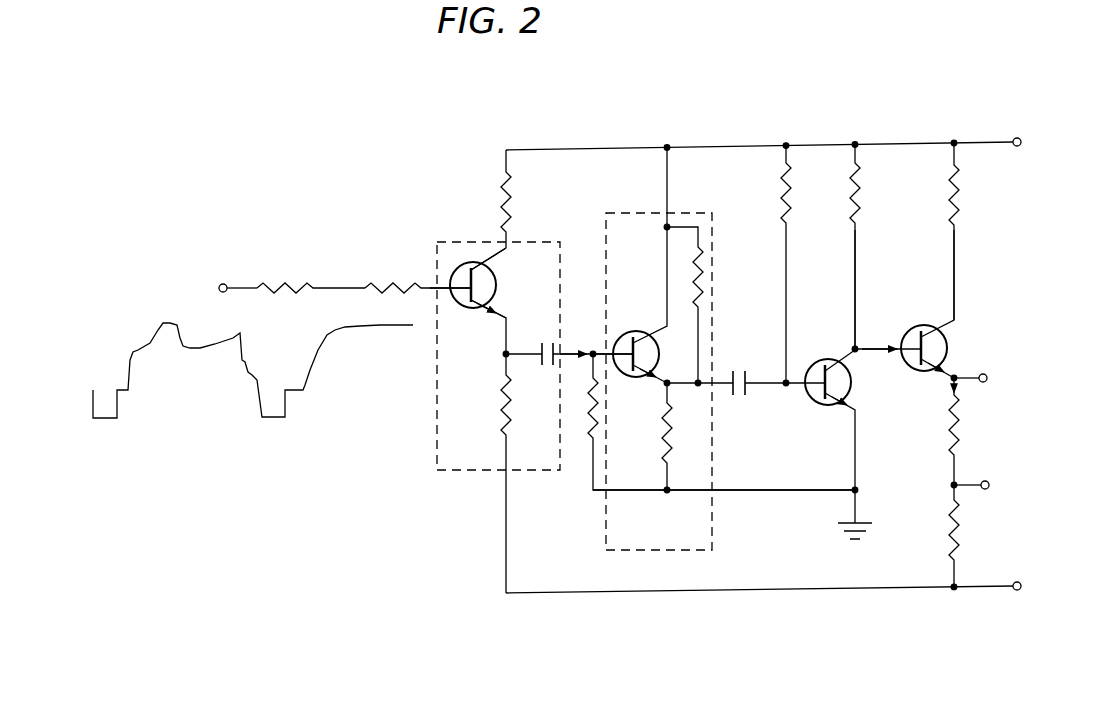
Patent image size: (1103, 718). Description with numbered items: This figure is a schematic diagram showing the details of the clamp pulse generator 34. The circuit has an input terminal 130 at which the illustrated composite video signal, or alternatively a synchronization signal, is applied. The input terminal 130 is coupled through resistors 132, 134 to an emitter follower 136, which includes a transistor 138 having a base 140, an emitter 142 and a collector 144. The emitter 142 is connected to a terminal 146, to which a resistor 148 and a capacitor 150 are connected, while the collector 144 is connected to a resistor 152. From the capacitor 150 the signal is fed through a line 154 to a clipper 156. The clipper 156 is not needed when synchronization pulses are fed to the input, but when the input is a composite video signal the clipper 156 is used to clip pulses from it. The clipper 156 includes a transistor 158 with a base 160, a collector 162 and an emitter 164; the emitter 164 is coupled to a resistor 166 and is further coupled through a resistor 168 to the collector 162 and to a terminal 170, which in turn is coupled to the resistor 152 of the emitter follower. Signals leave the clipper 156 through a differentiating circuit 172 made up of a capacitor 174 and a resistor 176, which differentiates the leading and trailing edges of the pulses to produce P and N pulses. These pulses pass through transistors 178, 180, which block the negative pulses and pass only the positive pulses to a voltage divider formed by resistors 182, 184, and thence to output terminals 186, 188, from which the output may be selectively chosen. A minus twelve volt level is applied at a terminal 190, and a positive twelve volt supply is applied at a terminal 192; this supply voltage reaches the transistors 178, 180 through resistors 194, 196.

The clamp pulse generator 34 is at (882, 86).
The input terminal 130 is at (223, 284).
The resistor 132 is at (291, 283).
The resistor 134 is at (392, 283).
The emitter follower 136 is at (455, 471).
The transistor 138 is at (455, 322).
The base 140 is at (468, 263).
The emitter 142 is at (481, 307).
The collector 144 is at (500, 258).
The terminal 146 is at (503, 360).
The resistor 148 is at (503, 412).
The capacitor 150 is at (542, 344).
The resistor 152 is at (502, 190).
The line 154 is at (596, 362).
The clipper 156 is at (705, 548).
The transistor 158 is at (620, 324).
The base 160 is at (618, 340).
The collector 162 is at (660, 333).
The emitter 164 is at (644, 390).
The resistor 166 is at (664, 458).
The resistor 168 is at (696, 296).
The terminal 170 is at (667, 145).
The differentiating circuit 172 is at (718, 332).
The capacitor 174 is at (734, 398).
The resistor 176 is at (783, 191).
The transistor 178 is at (811, 358).
The transistor 180 is at (915, 325).
The resistor 182 is at (952, 441).
The resistor 184 is at (953, 544).
The output terminal 186 is at (983, 373).
The output terminal 188 is at (985, 481).
The terminal 190 is at (1017, 582).
The terminal 192 is at (1015, 150).
The resistor 194 is at (852, 191).
The resistor 196 is at (952, 191).